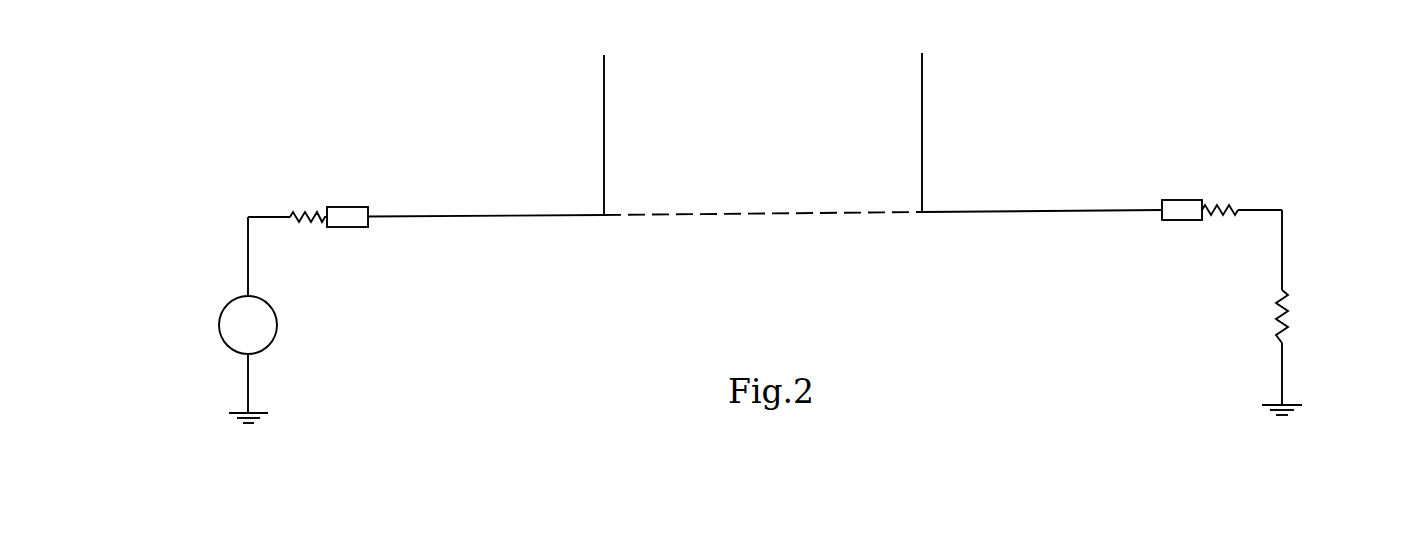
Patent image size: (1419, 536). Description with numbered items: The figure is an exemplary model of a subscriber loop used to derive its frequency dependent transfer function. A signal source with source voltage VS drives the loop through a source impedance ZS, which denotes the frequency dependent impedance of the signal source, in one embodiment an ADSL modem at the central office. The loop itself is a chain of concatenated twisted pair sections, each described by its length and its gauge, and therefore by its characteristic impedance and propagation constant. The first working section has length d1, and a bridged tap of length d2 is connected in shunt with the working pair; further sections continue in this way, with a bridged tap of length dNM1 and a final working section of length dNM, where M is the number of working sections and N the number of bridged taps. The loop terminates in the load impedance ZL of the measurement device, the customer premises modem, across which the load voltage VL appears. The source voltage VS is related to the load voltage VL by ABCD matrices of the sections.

The source voltage VS is at (187, 238).
The source impedance ZS is at (308, 201).
The first section length d1 is at (486, 228).
The second section length d2 is at (630, 135).
The (N+M-1)th section length dNM1 is at (980, 132).
The (N+M)th section length dNM is at (1042, 222).
The load impedance ZL is at (1232, 307).
The load voltage VL is at (1322, 228).